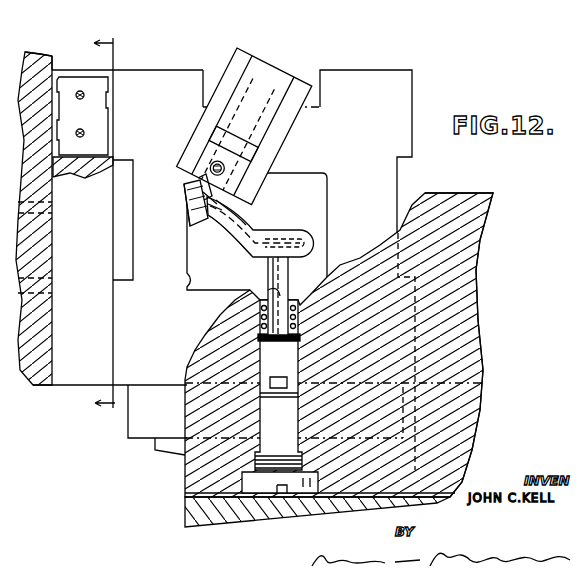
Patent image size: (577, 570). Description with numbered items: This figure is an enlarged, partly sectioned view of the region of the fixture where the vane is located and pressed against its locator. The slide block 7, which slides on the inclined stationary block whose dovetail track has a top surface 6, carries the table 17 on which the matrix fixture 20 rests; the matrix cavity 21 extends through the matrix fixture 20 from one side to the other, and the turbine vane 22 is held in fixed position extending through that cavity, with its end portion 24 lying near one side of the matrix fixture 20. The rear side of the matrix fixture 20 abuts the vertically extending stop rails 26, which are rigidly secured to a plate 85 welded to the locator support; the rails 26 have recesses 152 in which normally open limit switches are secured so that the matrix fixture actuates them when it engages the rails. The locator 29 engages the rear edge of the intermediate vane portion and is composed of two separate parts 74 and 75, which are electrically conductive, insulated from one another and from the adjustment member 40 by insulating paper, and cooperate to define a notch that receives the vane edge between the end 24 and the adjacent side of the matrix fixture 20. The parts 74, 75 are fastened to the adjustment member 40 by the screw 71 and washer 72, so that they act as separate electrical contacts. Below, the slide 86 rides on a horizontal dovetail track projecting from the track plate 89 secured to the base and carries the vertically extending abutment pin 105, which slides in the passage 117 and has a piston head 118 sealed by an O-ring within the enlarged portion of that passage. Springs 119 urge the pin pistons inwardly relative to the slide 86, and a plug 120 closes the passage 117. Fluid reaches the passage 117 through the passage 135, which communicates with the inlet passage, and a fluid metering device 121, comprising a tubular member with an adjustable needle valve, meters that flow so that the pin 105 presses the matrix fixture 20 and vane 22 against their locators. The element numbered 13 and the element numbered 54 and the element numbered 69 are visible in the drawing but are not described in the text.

The slide block 7 is at (155, 452).
The section line 13 is at (107, 227).
The table 17 is at (142, 428).
The matrix fixture 20 is at (393, 68).
The matrix cavity 21 is at (187, 292).
The member (turbine vane) 22 is at (299, 224).
The end portion of vane 24 is at (255, 258).
The rails 26 is at (82, 388).
The locator 29 is at (178, 218).
The adjustment member 40 is at (283, 133).
The side wall 54 is at (66, 113).
The top surface of track 6 is at (27, 266).
The nozzle bracket 69 is at (187, 188).
The screw 71 is at (218, 157).
The washer 72 is at (227, 170).
The locator part 74 is at (182, 223).
The locator part 75 is at (232, 212).
The plate 85 is at (22, 105).
The slide 86 is at (478, 258).
The track plate 89 is at (206, 522).
The abutment pin 105 is at (288, 270).
The passage 117 is at (275, 300).
The piston head 118 is at (260, 333).
The springs 119 is at (327, 277).
The plugs 120 is at (280, 417).
The fluid metering device 121 is at (51, 35).
The passage 135 is at (475, 357).
The recesses 152 is at (112, 78).